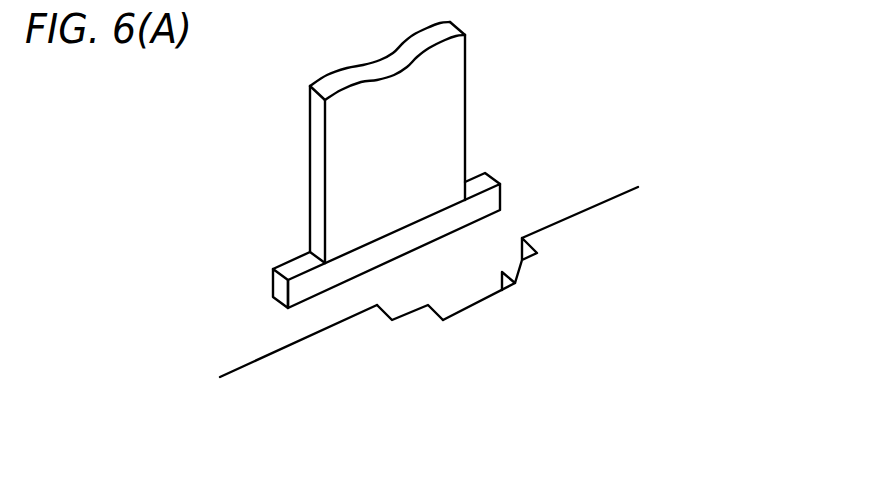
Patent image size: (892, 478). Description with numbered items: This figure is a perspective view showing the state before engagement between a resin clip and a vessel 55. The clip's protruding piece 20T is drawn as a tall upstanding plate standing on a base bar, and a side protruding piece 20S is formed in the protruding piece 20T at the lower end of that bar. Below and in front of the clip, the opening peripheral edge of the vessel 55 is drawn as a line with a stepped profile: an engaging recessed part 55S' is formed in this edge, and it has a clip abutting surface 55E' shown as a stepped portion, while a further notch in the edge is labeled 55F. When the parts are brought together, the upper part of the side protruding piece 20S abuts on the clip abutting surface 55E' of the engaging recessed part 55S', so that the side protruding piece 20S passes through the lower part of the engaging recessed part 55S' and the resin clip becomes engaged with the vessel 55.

The protruding piece 20T is at (358, 151).
The side protruding piece 20S is at (302, 287).
The vessel 55 is at (272, 371).
The recessed portion of plate 55F is at (377, 313).
The engaging recessed part 55S' is at (482, 336).
The clip abutting surface 55E' is at (530, 216).